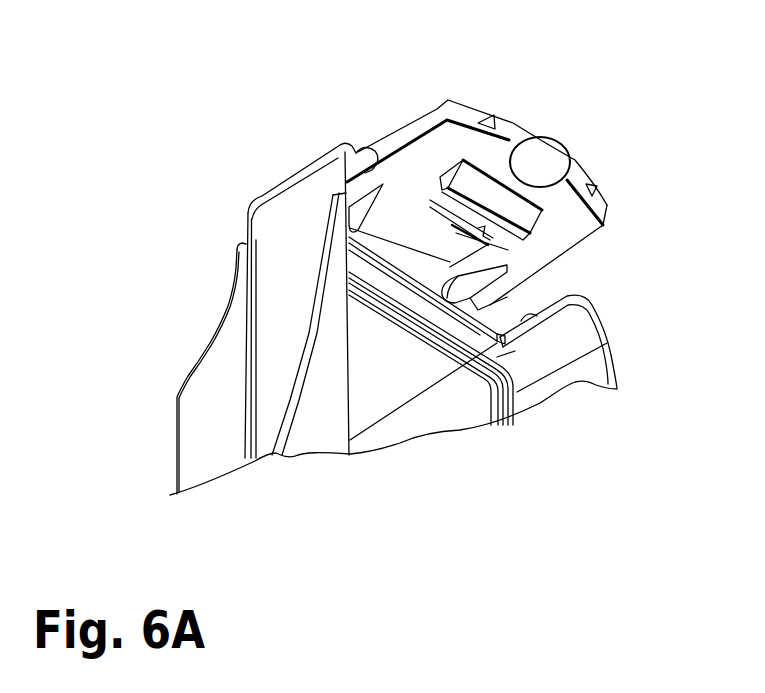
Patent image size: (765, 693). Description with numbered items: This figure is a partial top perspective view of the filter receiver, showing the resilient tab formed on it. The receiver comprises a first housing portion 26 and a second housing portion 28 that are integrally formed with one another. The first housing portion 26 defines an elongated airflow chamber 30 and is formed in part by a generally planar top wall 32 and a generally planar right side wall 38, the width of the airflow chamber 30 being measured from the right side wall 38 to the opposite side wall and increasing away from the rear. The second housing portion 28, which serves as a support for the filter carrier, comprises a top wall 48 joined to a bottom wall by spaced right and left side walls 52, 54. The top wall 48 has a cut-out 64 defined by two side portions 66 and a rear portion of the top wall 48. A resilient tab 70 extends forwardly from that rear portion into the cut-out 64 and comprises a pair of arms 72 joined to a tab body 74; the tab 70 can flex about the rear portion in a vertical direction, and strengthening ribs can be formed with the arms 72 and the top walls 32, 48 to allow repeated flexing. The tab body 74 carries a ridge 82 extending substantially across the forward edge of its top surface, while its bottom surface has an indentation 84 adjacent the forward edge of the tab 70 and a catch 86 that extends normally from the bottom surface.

The first housing portion 26 is at (170, 438).
The second housing portion 28 is at (246, 372).
The airflow chamber 30 is at (398, 396).
The top wall 32 is at (368, 337).
The right side wall 38 is at (460, 418).
The top wall 48 is at (270, 193).
The right side wall 52 is at (592, 367).
The left side wall 54 is at (282, 233).
The cut-out 64 is at (510, 248).
The side portions 66 is at (390, 160).
The resilient tab 70 is at (582, 152).
The arms 72 is at (363, 152).
The tab body 74 is at (427, 114).
The ridge 82 is at (484, 112).
The indentation 84 is at (533, 153).
The catch 86 is at (518, 220).